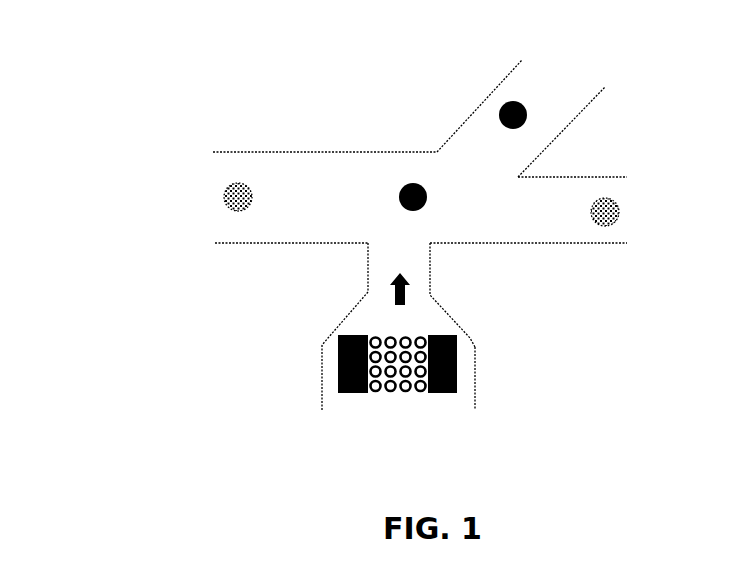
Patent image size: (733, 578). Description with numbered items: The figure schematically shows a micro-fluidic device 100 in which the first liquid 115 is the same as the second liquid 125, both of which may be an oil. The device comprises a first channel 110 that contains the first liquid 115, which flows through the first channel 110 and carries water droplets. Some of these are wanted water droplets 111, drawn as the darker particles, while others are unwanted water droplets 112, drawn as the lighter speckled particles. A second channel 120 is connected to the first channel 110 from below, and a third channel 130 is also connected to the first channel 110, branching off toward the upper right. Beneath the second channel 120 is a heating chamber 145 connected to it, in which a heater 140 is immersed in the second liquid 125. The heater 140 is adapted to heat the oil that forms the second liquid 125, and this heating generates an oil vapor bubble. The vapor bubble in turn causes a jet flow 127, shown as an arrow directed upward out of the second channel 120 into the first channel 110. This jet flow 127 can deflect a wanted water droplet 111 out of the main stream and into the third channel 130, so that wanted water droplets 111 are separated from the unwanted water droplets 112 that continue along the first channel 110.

The micro-fluidic device 100 is at (108, 63).
The first channel 110 is at (287, 243).
The wanted water droplets 111 is at (403, 181).
The unwanted water droplets 112 is at (235, 187).
The first liquid 115 is at (320, 177).
The second channel 120 is at (367, 268).
The second liquid 125 is at (463, 370).
The jet flow 127 is at (407, 293).
The third channel 130 is at (518, 63).
The heater 140 is at (403, 392).
The heating chamber 145 is at (320, 368).